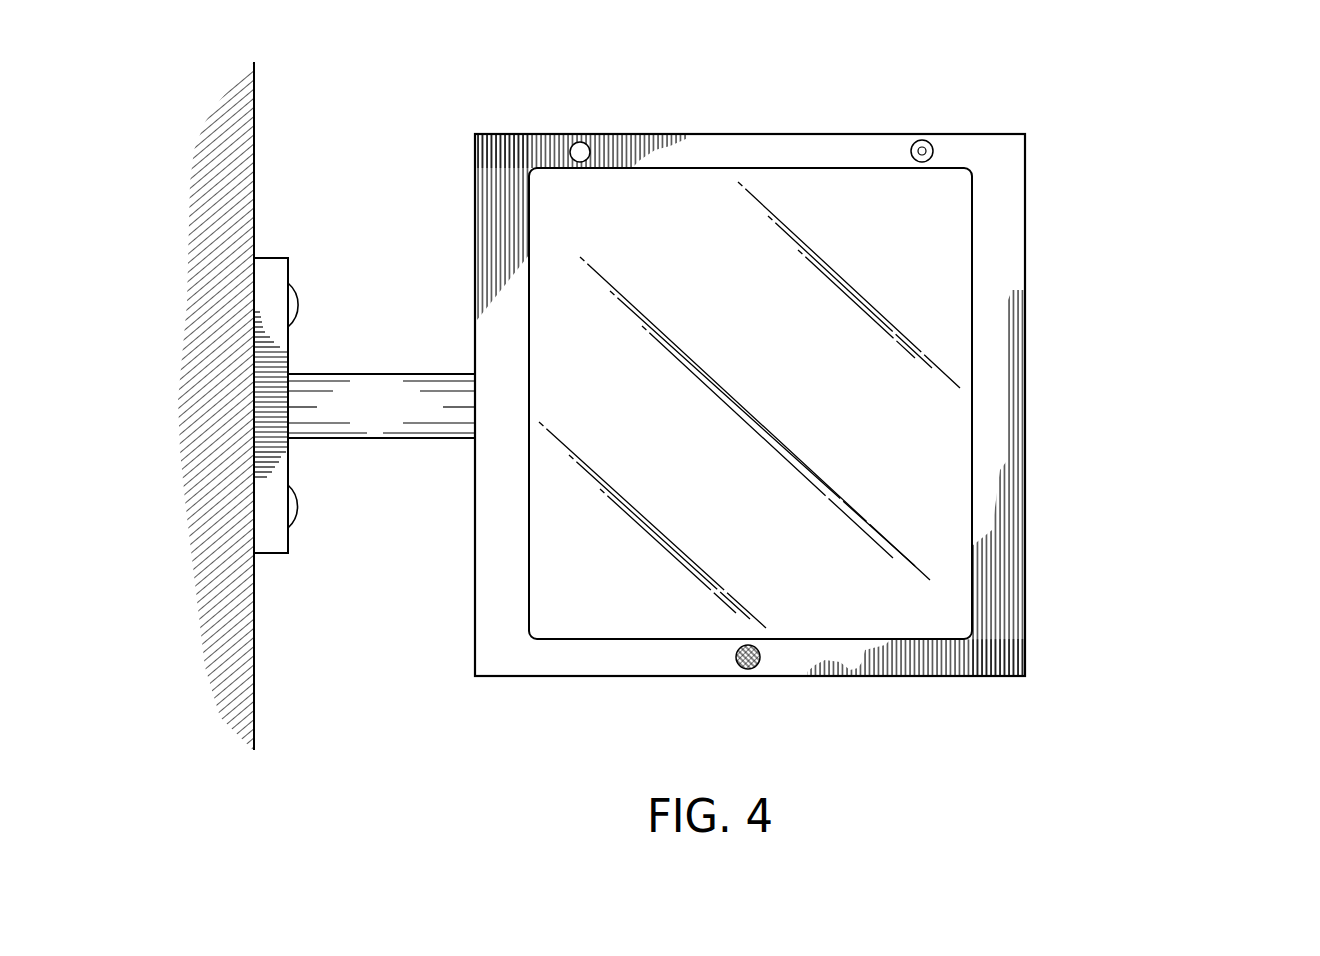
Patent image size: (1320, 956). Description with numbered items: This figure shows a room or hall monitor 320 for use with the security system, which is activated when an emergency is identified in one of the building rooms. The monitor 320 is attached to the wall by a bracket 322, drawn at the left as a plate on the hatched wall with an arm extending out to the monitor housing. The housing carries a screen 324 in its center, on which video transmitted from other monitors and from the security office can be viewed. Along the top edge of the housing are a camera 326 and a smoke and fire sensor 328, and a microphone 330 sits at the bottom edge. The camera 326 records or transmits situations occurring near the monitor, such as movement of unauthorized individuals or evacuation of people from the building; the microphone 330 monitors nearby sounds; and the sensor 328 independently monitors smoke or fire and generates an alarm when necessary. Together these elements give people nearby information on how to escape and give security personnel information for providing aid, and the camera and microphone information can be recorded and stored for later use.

The room or hall monitor 320 is at (871, 409).
The bracket 322 is at (275, 533).
The screen 324 is at (737, 469).
The camera 326 is at (922, 150).
The smoke and fire sensor 328 is at (582, 150).
The microphone 330 is at (755, 668).